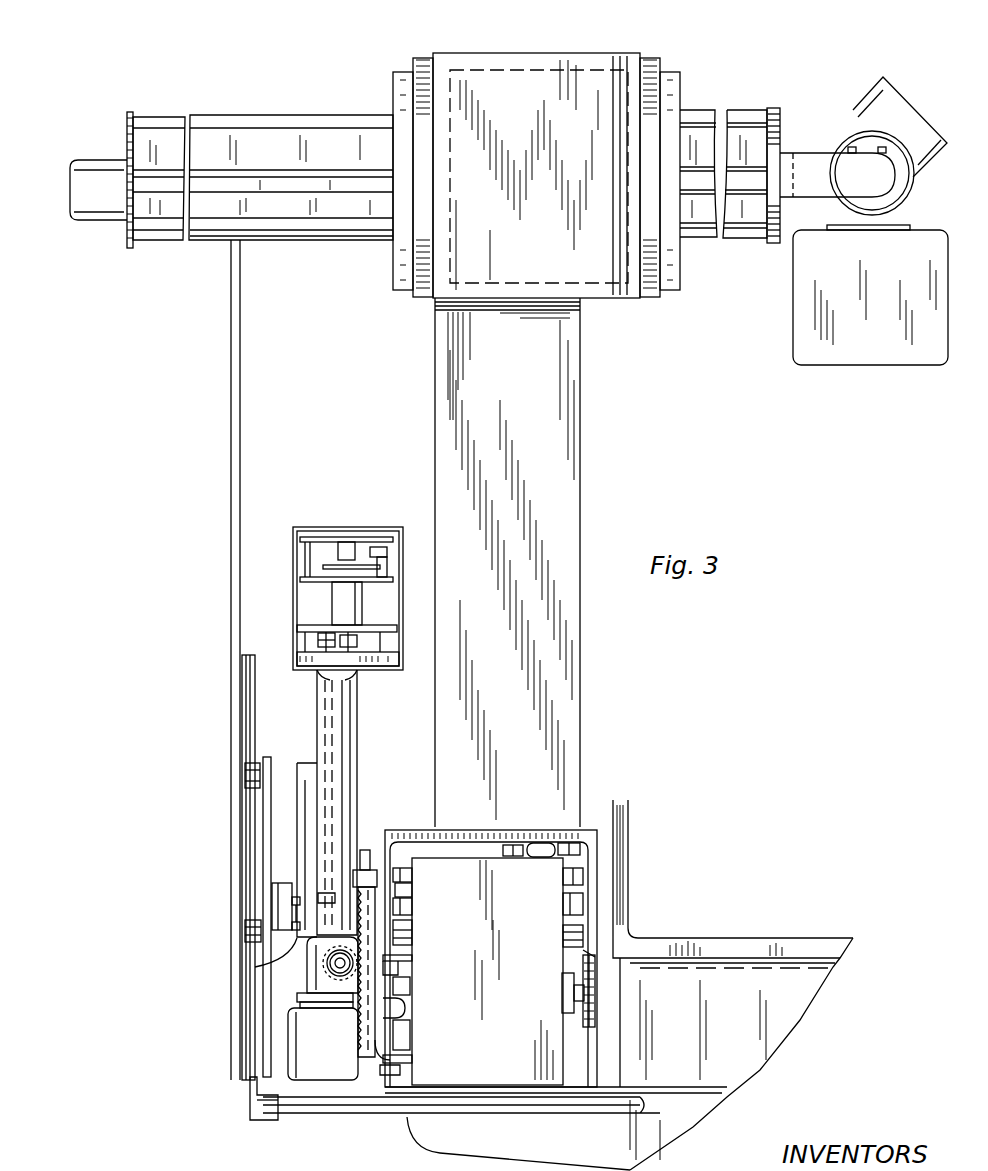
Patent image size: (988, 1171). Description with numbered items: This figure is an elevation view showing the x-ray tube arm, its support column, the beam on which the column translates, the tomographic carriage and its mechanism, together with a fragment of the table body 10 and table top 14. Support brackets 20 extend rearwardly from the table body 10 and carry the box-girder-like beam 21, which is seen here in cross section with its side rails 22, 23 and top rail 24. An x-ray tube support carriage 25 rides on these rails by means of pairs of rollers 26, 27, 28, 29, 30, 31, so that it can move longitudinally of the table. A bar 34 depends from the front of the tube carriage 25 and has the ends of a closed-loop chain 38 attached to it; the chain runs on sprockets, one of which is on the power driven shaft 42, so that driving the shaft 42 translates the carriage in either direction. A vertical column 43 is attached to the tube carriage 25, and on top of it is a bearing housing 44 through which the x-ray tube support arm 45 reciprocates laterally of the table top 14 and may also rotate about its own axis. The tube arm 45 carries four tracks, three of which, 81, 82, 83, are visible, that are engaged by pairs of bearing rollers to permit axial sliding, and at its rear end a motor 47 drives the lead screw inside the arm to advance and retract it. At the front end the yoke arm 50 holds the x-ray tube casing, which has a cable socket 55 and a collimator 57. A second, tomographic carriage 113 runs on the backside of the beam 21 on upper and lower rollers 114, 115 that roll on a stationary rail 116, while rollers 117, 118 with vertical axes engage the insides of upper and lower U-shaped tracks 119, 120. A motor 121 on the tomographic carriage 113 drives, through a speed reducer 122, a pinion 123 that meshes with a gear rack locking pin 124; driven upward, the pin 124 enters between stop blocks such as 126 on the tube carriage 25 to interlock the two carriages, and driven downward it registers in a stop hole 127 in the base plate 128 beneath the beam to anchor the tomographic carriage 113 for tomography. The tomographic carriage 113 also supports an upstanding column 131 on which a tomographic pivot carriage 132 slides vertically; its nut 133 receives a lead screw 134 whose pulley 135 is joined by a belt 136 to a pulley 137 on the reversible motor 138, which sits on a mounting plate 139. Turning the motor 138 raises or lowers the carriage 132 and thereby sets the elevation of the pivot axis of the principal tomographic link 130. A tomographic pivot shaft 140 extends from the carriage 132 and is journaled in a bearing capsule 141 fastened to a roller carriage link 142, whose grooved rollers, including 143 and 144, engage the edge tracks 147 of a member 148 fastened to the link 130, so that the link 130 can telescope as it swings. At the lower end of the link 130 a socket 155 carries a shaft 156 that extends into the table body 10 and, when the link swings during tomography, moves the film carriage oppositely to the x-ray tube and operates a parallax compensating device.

The table body 10 is at (752, 1018).
The table top 14 is at (752, 940).
The support brackets 20 is at (462, 1135).
The beam 21 is at (520, 1000).
The side rail 22 is at (570, 906).
The side rail 23 is at (404, 909).
The top rail 24 is at (551, 843).
The x-ray tube support carriage 25 is at (414, 819).
The roller 26 is at (568, 881).
The roller 27 is at (566, 937).
The roller 28 is at (404, 889).
The roller 29 is at (406, 933).
The roller 30 is at (519, 845).
The roller 31 is at (583, 845).
The bar 34 is at (593, 951).
The chain 38 is at (590, 1011).
The power driven shaft 42 is at (576, 993).
The column 43 is at (553, 470).
The bearing housing 44 is at (572, 52).
The x-ray tube support arm 45 is at (305, 118).
The motor 47 is at (119, 160).
The yoke arm 50 is at (815, 160).
The socket 55 is at (870, 85).
The collimator 57 is at (862, 330).
The track 81 is at (236, 120).
The track 82 is at (246, 175).
The track 83 is at (318, 236).
The tomographic carriage 113 is at (366, 1036).
The upper rollers 114 is at (408, 991).
The lower rollers 115 is at (408, 1036).
The stationary rail 116 is at (405, 1011).
The roller 117 is at (404, 967).
The roller 118 is at (410, 1059).
The upper U-shaped track 119 is at (410, 958).
The lower U-shaped track 120 is at (405, 1062).
The motor 121 is at (296, 1020).
The speed reducer 122 is at (313, 986).
The pinion 123 is at (325, 965).
The gear rack locking pin 124 is at (366, 1013).
The stop block 126 is at (405, 876).
The stop hole 127 is at (365, 1094).
The base plate 128 is at (492, 1087).
The principal tomographic link 130 is at (232, 430).
The column 131 is at (353, 735).
The tomographic pivot carriage 132 is at (304, 765).
The nut 133 is at (292, 887).
The lead screw 134 is at (330, 764).
The pulley 135 is at (320, 640).
The belt 136 is at (355, 668).
The pulley 137 is at (352, 643).
The motor 138 is at (362, 598).
The mounting plate 139 is at (398, 628).
The tomographic pivot shaft 140 is at (258, 964).
The bearing capsule 141 is at (280, 900).
The roller carriage link 142 is at (266, 800).
The roller 143 is at (248, 776).
The roller 144 is at (248, 936).
The edge tracks 147 is at (248, 706).
The member 148 is at (247, 681).
The socket 155 is at (268, 1115).
The shaft 156 is at (308, 1105).